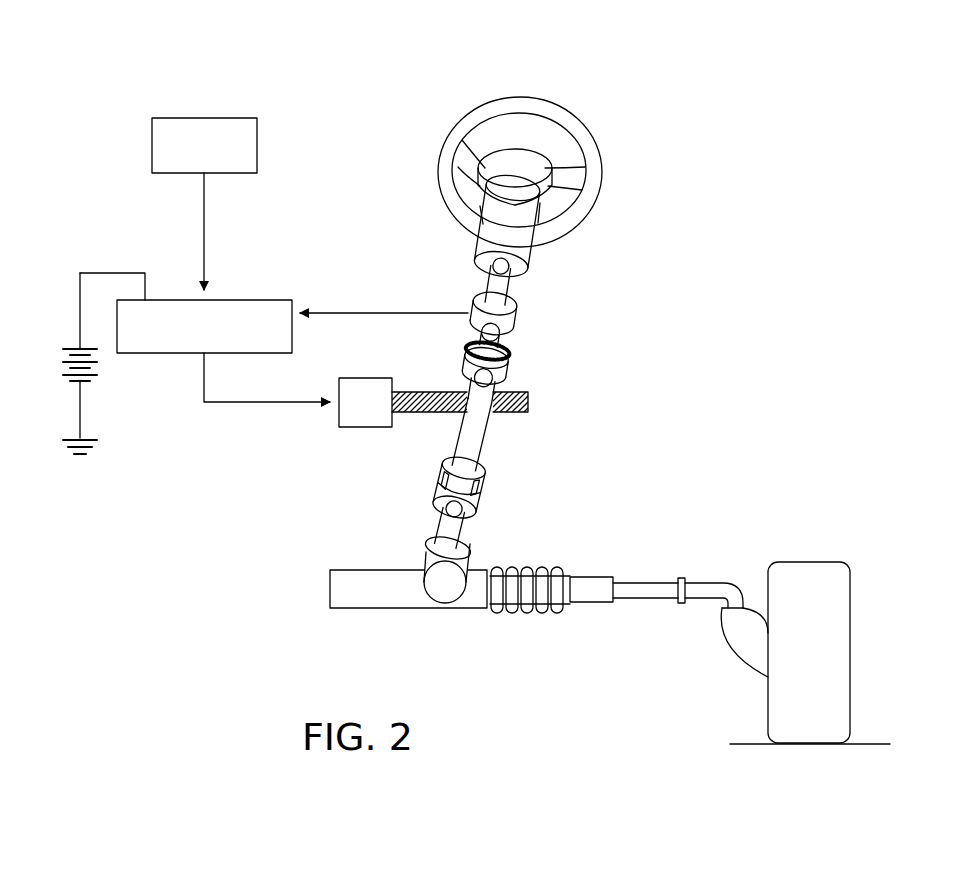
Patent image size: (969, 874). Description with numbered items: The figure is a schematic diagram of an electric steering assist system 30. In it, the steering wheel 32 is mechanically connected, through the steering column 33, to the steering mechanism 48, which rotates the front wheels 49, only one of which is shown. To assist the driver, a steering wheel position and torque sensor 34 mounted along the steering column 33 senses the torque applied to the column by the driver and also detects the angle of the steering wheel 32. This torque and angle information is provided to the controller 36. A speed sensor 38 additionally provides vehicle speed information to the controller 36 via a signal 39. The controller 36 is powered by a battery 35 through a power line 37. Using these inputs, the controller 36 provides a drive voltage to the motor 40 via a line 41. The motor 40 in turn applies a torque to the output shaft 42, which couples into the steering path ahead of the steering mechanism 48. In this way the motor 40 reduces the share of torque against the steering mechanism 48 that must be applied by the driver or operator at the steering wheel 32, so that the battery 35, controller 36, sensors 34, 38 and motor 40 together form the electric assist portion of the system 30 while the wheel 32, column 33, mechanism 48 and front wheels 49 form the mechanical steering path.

The electric steering assist system 30 is at (90, 172).
The steering wheel 32 is at (572, 120).
The steering column 33 is at (505, 270).
The steering wheel position and torque sensor 34 is at (510, 315).
The battery 35 is at (65, 365).
The controller 36 is at (270, 298).
The power line 37 is at (108, 272).
The speed sensor 38 is at (232, 118).
The signal 39 is at (202, 262).
The motor 40 is at (360, 427).
The line 41 is at (222, 402).
The output shaft 42 is at (528, 393).
The steering mechanism 48 is at (465, 555).
The front wheels 49 is at (795, 568).